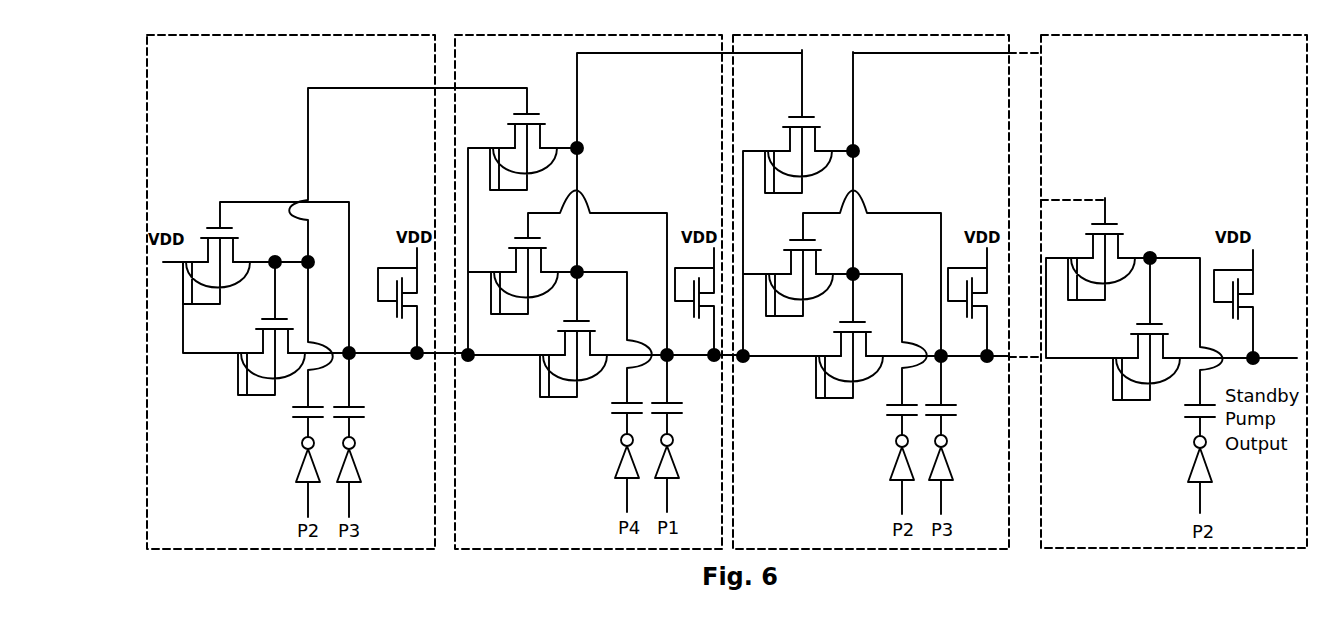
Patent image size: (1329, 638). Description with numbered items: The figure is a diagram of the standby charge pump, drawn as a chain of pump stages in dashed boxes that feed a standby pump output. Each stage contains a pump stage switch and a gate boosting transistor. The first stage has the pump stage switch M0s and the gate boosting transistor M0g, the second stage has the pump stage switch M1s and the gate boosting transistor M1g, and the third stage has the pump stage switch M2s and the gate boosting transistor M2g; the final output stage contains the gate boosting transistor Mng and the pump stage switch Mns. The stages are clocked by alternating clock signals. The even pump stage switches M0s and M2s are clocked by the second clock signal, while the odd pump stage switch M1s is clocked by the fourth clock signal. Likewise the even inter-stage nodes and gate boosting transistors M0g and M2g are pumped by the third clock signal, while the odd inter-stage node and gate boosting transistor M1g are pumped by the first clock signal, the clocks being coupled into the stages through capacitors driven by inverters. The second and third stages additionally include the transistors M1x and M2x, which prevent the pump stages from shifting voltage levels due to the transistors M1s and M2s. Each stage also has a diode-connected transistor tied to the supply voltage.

The gate boosting transistor M0g is at (241, 233).
The pump stage switch M0s is at (241, 333).
The transistor M1x is at (545, 124).
The gate boosting transistor M1g is at (539, 230).
The pump stage switch M1s is at (548, 333).
The transistor M2x is at (820, 123).
The gate boosting transistor M2g is at (810, 230).
The pump stage switch M2s is at (824, 334).
The gate boosting transistor Mng is at (1117, 210).
The pump stage switch Mns is at (1123, 330).